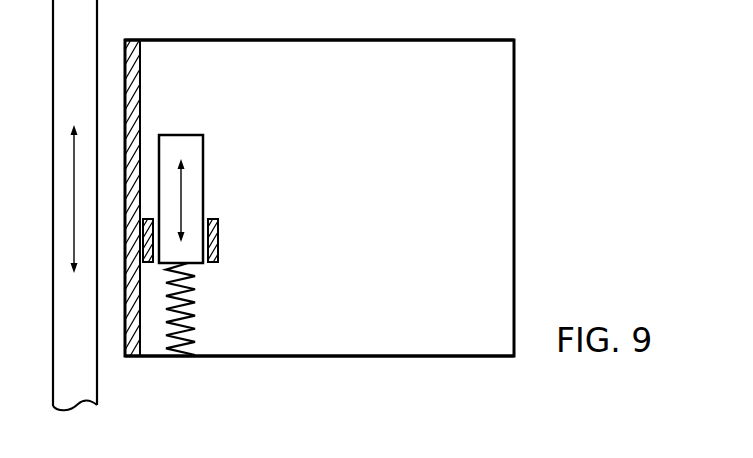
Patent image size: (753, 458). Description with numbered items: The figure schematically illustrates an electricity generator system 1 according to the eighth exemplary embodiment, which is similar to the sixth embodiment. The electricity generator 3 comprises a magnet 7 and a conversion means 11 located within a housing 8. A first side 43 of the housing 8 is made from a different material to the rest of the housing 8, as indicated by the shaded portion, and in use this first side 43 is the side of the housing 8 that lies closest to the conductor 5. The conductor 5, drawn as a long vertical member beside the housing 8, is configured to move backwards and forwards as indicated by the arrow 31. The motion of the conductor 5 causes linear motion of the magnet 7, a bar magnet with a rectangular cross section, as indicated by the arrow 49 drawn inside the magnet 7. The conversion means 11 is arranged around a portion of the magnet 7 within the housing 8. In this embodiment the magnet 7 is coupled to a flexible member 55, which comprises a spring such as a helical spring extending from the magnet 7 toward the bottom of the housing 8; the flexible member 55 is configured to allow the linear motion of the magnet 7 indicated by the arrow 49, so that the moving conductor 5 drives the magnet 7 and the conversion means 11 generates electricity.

The electricity generator system 1 is at (242, 368).
The electricity generator 3 is at (515, 147).
The conductor 5 is at (52, 93).
The magnet 7 is at (204, 152).
The housing 8 is at (298, 40).
The conversion means 11 is at (219, 238).
The arrow 31 is at (74, 211).
The first side 43 is at (130, 39).
The arrow 49 is at (183, 200).
The flexible member 55 is at (197, 316).